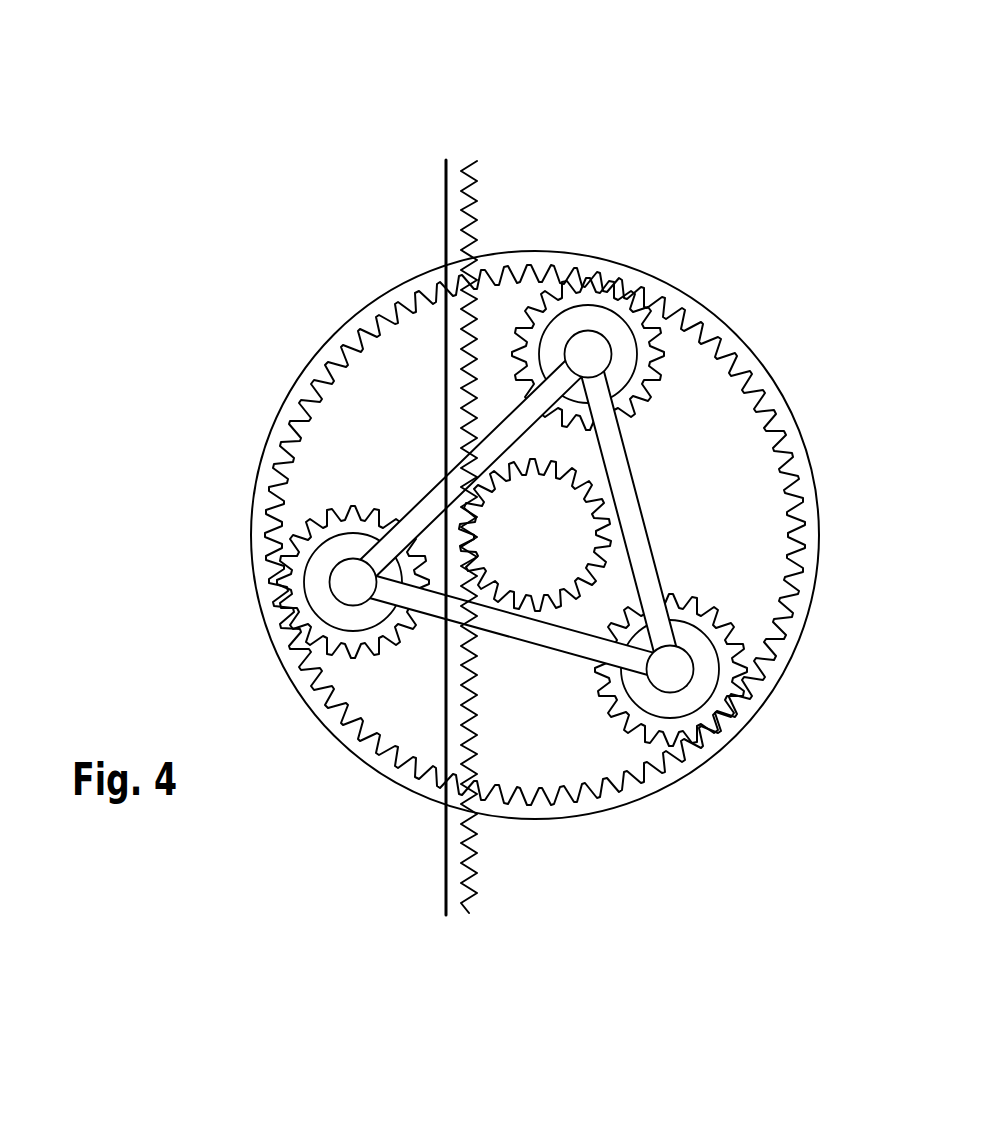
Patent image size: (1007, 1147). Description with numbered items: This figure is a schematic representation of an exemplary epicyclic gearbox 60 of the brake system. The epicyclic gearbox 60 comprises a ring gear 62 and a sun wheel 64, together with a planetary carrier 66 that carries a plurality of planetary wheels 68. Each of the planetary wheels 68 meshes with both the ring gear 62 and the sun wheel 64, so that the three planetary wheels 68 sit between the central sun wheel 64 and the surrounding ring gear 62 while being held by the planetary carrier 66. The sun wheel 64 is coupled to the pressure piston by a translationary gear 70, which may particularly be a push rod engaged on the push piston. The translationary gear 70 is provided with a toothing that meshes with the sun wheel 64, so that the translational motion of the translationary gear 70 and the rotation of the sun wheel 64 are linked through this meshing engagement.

The epicyclic gearbox 60 is at (362, 98).
The ring gear 62 is at (703, 320).
The sun wheel 64 is at (523, 570).
The planetary carrier 66 is at (613, 463).
The planetary wheels 68 is at (560, 277).
The translationary gear 70 is at (457, 190).